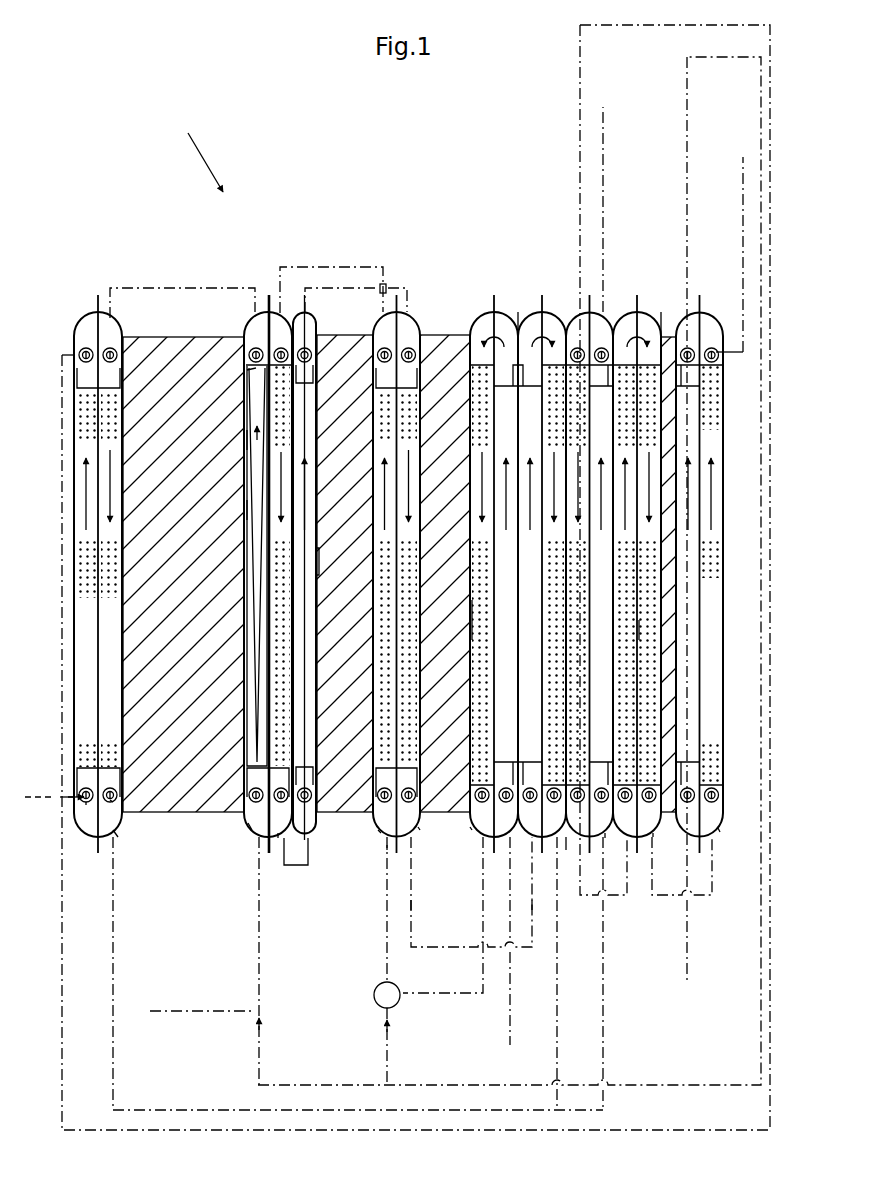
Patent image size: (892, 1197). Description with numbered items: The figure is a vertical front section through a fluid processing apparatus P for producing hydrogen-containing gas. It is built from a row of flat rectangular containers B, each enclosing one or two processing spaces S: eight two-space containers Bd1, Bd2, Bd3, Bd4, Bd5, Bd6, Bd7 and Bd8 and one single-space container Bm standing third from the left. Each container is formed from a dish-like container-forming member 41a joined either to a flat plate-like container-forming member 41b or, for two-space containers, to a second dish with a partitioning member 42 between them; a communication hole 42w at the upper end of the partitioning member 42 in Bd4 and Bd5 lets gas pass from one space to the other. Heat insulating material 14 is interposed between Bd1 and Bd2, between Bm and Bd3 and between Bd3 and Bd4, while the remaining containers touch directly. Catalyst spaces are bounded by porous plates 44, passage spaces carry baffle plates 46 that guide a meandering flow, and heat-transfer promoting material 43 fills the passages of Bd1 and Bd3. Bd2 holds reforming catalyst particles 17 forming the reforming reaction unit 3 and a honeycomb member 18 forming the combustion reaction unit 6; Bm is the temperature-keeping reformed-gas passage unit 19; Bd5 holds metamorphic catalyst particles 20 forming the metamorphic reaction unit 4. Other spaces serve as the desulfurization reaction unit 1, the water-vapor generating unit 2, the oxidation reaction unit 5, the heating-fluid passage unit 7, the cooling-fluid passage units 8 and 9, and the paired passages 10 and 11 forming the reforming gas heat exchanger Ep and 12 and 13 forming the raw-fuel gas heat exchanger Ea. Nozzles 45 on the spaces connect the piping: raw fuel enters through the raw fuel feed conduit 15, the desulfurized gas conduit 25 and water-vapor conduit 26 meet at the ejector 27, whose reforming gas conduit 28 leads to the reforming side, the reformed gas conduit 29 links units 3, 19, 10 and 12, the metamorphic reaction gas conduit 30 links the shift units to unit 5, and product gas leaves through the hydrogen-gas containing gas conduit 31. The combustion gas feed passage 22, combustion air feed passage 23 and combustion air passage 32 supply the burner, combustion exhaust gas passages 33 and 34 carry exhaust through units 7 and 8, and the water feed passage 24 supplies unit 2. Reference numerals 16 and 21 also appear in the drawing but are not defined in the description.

The fluid processing apparatus P is at (199, 150).
The flat container B is at (201, 253).
The left-end two-space containing container Bd1 is at (80, 318).
The second two-space containing container Bd2 is at (456, 537).
The single-space containing container Bm is at (328, 561).
The third two-space containing container Bd3 is at (241, 542).
The fourth two-space containing container Bd4 is at (473, 526).
The fifth two-space containing container Bd5 is at (552, 313).
The sixth two-space containing container Bd6 is at (573, 313).
The seventh two-space containing container Bd7 is at (687, 535).
The eighth two-space containing container Bd8 is at (718, 534).
The processing space S is at (78, 335).
The heat insulating material 14 is at (167, 365).
The heating passage 16 is at (477, 625).
The ceramic porous particles 17 is at (268, 662).
The honeycomb member 18 is at (250, 620).
The temperature-keeping reformed-gas passage unit 19 is at (312, 838).
The ceramic porous particles 20 is at (640, 630).
The catalyst layer 21 is at (705, 655).
The combustion gas feed passage 22 is at (203, 1013).
The combustion air feed passage 23 is at (688, 937).
The water feed passage 24 is at (35, 800).
The desulfurized gas conduit 25 is at (427, 997).
The water-vapor conduit 26 is at (70, 997).
The ejector 27 is at (377, 997).
The reforming gas conduit 28 is at (363, 262).
The reformed gas conduit 29 is at (390, 262).
The metamorphic reaction gas conduit 30 is at (577, 173).
The hydrogen-gas containing gas conduit 31 is at (737, 356).
The combustion air passage 32 is at (655, 1085).
The combustion exhaust gas passage 33 is at (193, 288).
The further combustion exhaust gas passage 34 is at (603, 183).
The dish-like container-forming member 41a is at (247, 480).
The flat plate-like container-forming member 41b is at (298, 447).
The partitioning member 42 is at (265, 568).
The communication hole 42w is at (518, 313).
The heat-transfer promoting material 43 is at (408, 677).
The porous plates 44 is at (247, 372).
The nozzle 45 is at (113, 800).
The baffle plates 46 is at (310, 390).
The desulfurization reaction unit 1 is at (470, 827).
The water-vapor generating unit 2 is at (88, 837).
The reforming reaction unit 3 is at (278, 833).
The metamorphic reaction unit 4 is at (553, 840).
The oxidation reaction unit 5 is at (718, 832).
The combustion reaction unit 6 is at (248, 823).
The heating-fluid passage unit 7 is at (118, 837).
The metamorphic-reaction unit cooling-fluid passage unit 8 is at (605, 838).
The oxidation-reaction unit cooling-medium passage unit 9 is at (653, 837).
The upstream reformed-gas passage unit 10 is at (418, 827).
The reforming-gas passage unit 11 is at (378, 830).
The downstream reformed-gas passage unit 12 is at (528, 840).
The raw-fuel gas passage unit 13 is at (503, 843).
The raw fuel feed conduit 15 is at (512, 980).
The fuel-gas heat exchanger Ea is at (452, 880).
The reforming gas heat exchanger Ep is at (382, 837).